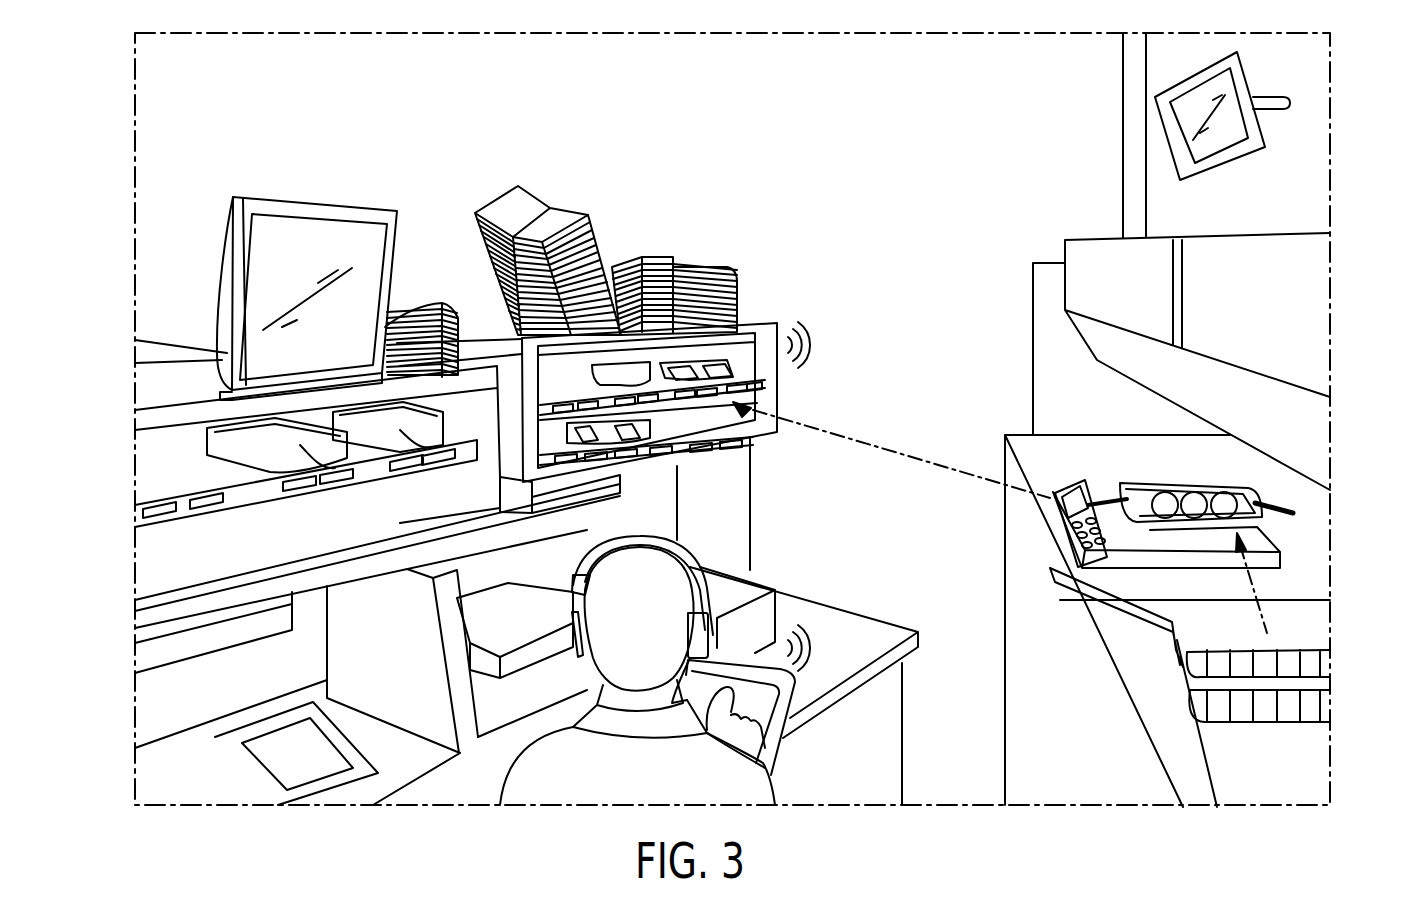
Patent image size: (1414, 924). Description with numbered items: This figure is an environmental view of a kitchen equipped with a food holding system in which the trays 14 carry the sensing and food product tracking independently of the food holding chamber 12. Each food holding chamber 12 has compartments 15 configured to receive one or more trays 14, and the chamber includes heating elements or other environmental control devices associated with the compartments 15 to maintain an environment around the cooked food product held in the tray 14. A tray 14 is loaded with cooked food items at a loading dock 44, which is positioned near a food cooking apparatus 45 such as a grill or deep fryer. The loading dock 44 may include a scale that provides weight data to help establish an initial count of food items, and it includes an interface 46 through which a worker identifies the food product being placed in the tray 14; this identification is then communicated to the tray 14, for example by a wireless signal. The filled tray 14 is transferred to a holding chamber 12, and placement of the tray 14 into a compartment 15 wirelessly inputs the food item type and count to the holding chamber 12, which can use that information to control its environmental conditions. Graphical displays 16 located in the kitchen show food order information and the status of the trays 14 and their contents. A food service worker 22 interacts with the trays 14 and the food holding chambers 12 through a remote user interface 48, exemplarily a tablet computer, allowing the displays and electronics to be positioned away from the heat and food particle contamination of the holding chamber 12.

The food holding chamber 12 is at (212, 412).
The tray 14 is at (288, 467).
The compartment 15 is at (167, 492).
The graphical display 16 is at (312, 230).
The food service worker 22 is at (520, 783).
The loading dock 44 is at (1277, 563).
The food cooking apparatus 45 is at (1190, 713).
The interface 46 is at (1068, 488).
The remote user interface 48 is at (782, 676).